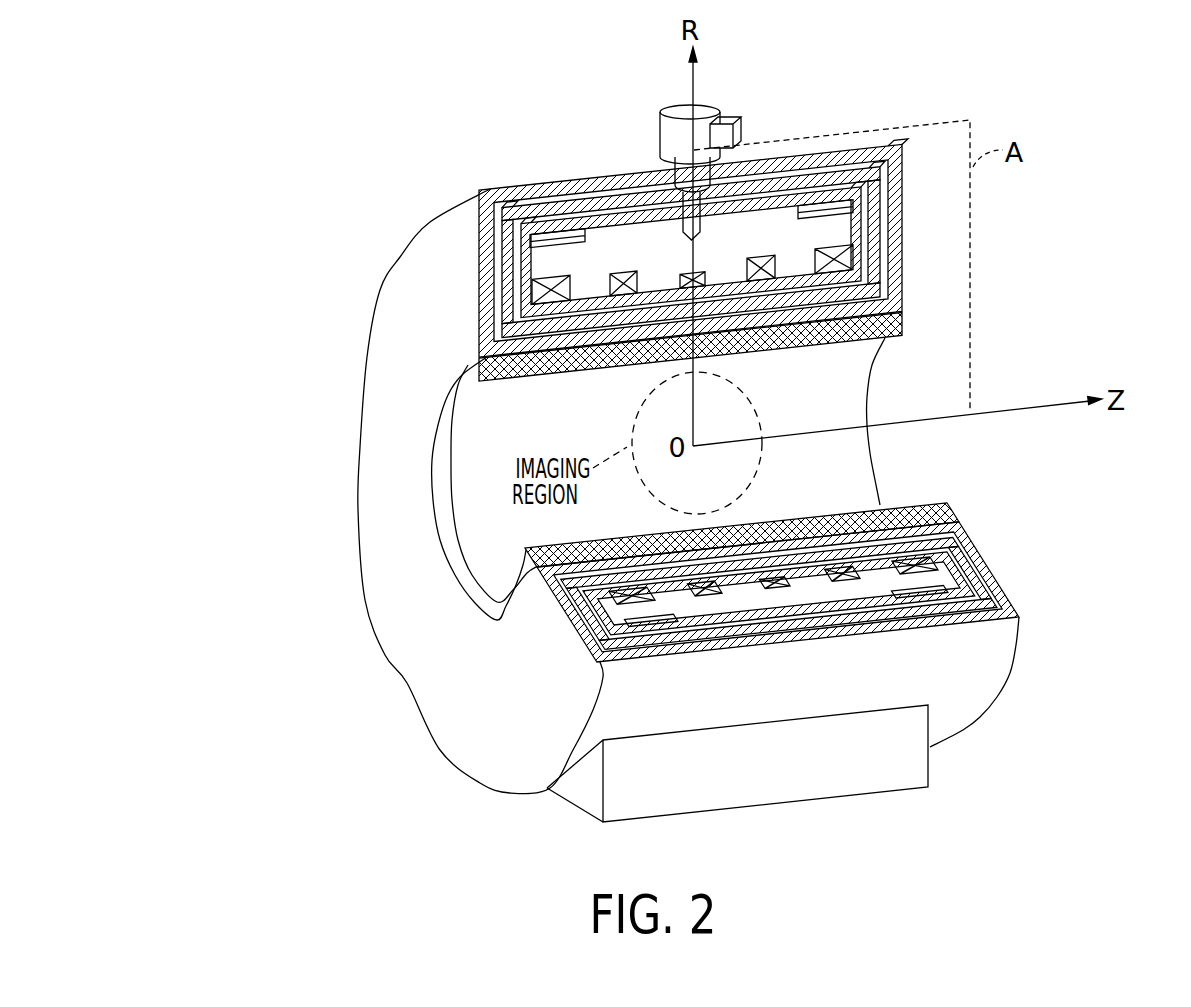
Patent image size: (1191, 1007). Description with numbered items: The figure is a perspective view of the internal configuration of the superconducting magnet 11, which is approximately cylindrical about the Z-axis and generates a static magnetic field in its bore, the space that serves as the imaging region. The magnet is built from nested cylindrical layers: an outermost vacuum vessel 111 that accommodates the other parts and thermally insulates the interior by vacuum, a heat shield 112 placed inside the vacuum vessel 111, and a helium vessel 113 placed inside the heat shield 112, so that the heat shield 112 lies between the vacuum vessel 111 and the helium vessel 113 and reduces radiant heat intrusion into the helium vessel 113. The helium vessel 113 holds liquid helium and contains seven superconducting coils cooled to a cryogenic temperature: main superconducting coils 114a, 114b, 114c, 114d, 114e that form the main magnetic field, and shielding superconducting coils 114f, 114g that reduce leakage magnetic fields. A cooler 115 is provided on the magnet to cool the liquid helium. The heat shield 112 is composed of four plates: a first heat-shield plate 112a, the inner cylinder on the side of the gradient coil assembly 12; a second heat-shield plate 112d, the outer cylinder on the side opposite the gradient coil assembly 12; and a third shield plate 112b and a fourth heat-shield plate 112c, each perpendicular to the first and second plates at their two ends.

The superconducting magnet 11 is at (1116, 556).
The gradient coil assembly 12 is at (904, 330).
The vacuum vessel 111 is at (880, 147).
The heat shield 112 is at (691, 378).
The first heat-shield plate 112a is at (498, 338).
The third shield plate 112b is at (500, 272).
The fourth heat-shield plate 112c is at (884, 213).
The second heat-shield plate 112d is at (810, 177).
The helium vessel 113 is at (756, 200).
The main superconducting coil 114a is at (541, 305).
The main superconducting coil 114b is at (613, 297).
The main superconducting coil 114c is at (680, 283).
The main superconducting coil 114d is at (768, 281).
The main superconducting coil 114e is at (860, 262).
The shielding superconducting coil 114f is at (594, 228).
The shielding superconducting coil 114g is at (798, 216).
The cooler 115 is at (703, 100).